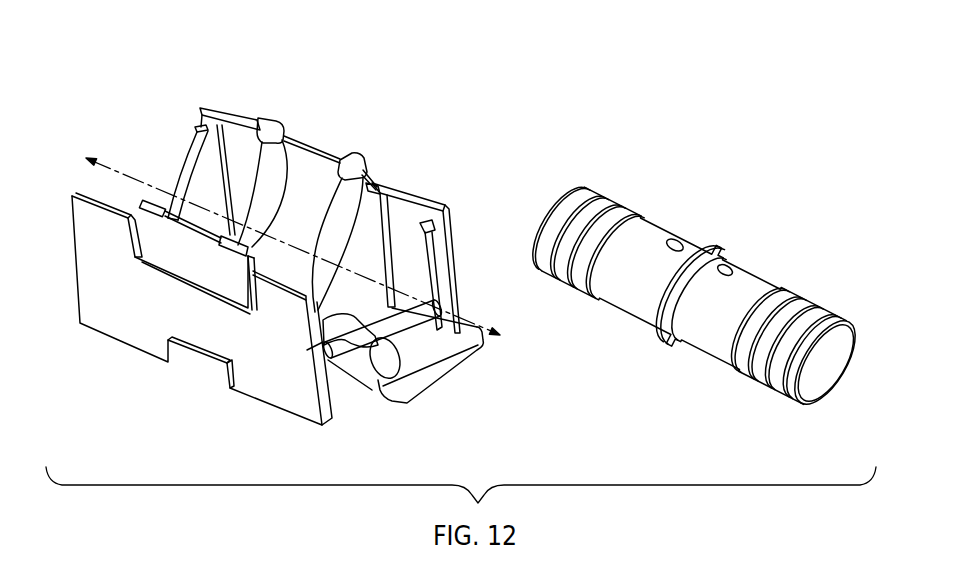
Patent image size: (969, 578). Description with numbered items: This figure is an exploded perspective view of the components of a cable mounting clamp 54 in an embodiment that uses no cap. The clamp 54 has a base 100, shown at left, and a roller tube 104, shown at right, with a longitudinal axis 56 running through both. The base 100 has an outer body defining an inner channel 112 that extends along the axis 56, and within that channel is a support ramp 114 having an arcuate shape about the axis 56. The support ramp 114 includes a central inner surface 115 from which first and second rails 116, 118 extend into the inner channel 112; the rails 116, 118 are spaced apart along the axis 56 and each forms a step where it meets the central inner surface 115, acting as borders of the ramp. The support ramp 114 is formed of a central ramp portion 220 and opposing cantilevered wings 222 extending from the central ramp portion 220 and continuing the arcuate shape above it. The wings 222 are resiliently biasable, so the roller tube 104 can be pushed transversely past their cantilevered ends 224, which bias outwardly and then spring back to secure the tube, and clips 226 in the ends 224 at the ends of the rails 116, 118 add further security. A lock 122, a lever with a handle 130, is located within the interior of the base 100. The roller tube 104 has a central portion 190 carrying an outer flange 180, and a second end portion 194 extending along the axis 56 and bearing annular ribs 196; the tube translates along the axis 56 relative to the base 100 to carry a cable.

The cable mounting clamp 54 is at (162, 80).
The axis 56 is at (128, 173).
The base 100 is at (108, 344).
The roller tube 104 is at (701, 285).
The inner channel 112 is at (302, 170).
The support ramp 114 is at (323, 173).
The central inner surface 115 is at (344, 158).
The first rail 116 is at (263, 182).
The second rail 118 is at (383, 212).
The lock 122 is at (360, 397).
The handle 130 is at (433, 365).
The outer flange 180 is at (737, 224).
The central portion 190 is at (694, 295).
The second end portion 194 is at (824, 362).
The ribs 196 is at (681, 288).
The central ramp portion 220 is at (363, 261).
The cantilevered wings 222 is at (372, 188).
The cantilevered ends 224 is at (376, 221).
The clips 226 is at (280, 117).